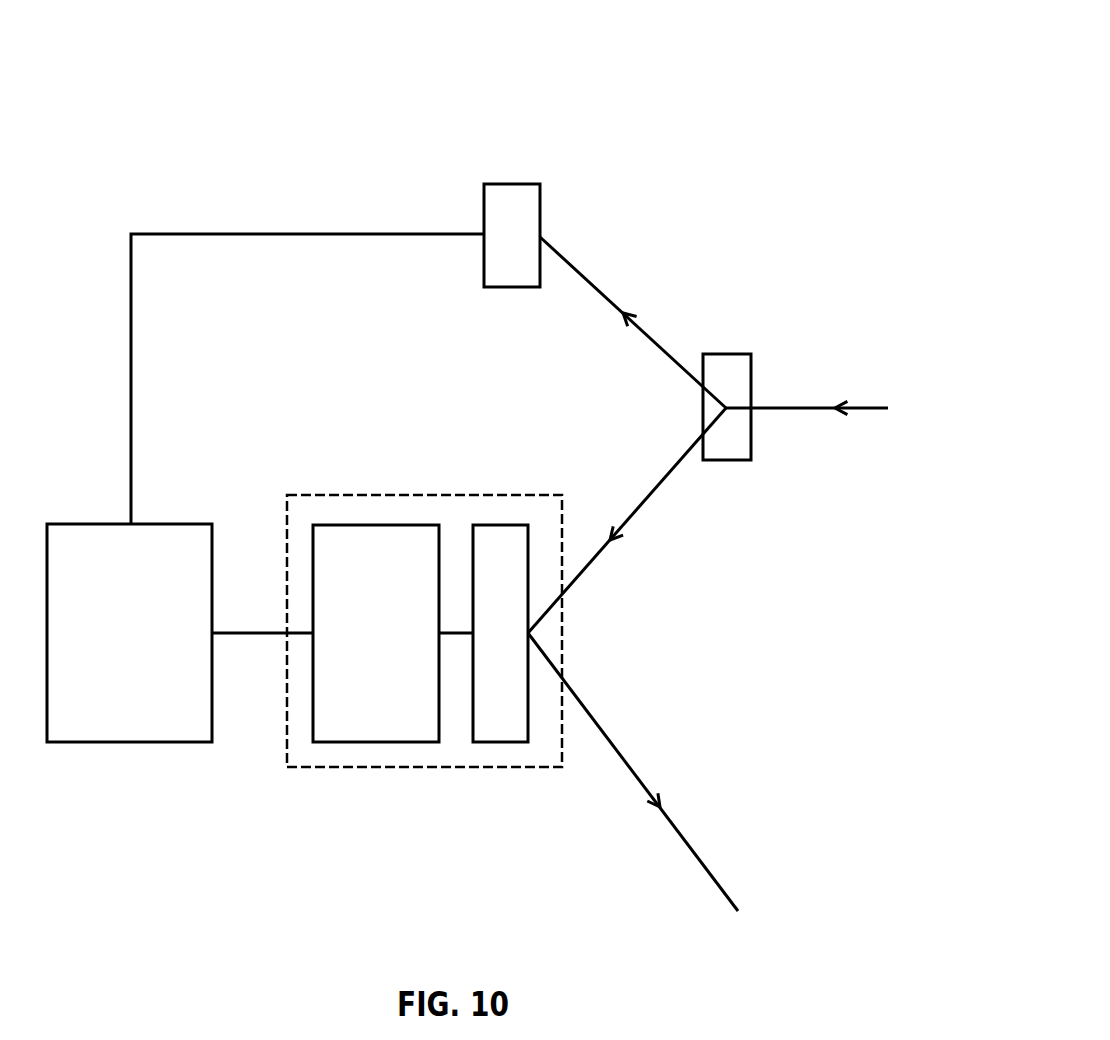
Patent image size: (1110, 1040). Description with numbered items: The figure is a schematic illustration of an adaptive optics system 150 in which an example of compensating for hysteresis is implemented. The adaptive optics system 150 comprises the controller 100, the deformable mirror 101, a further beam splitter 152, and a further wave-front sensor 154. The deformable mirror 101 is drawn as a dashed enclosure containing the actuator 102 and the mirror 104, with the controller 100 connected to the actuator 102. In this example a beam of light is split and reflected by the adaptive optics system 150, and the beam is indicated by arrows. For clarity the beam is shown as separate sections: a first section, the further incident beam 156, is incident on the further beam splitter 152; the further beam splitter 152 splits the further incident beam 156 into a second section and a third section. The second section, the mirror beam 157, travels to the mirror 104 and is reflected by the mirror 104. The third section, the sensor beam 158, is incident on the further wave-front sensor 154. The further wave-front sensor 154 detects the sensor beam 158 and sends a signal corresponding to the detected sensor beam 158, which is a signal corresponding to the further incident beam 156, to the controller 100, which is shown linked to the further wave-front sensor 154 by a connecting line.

The controller 100 is at (103, 648).
The deformable mirror 101 is at (400, 495).
The actuator 102 is at (351, 648).
The mirror 104 is at (482, 648).
The adaptive optics system 150 is at (717, 78).
The further beam splitter 152 is at (728, 354).
The further wave-front sensor 154 is at (492, 249).
The further incident beam 156 is at (810, 405).
The mirror beam 157 is at (643, 503).
The sensor beam 158 is at (598, 288).